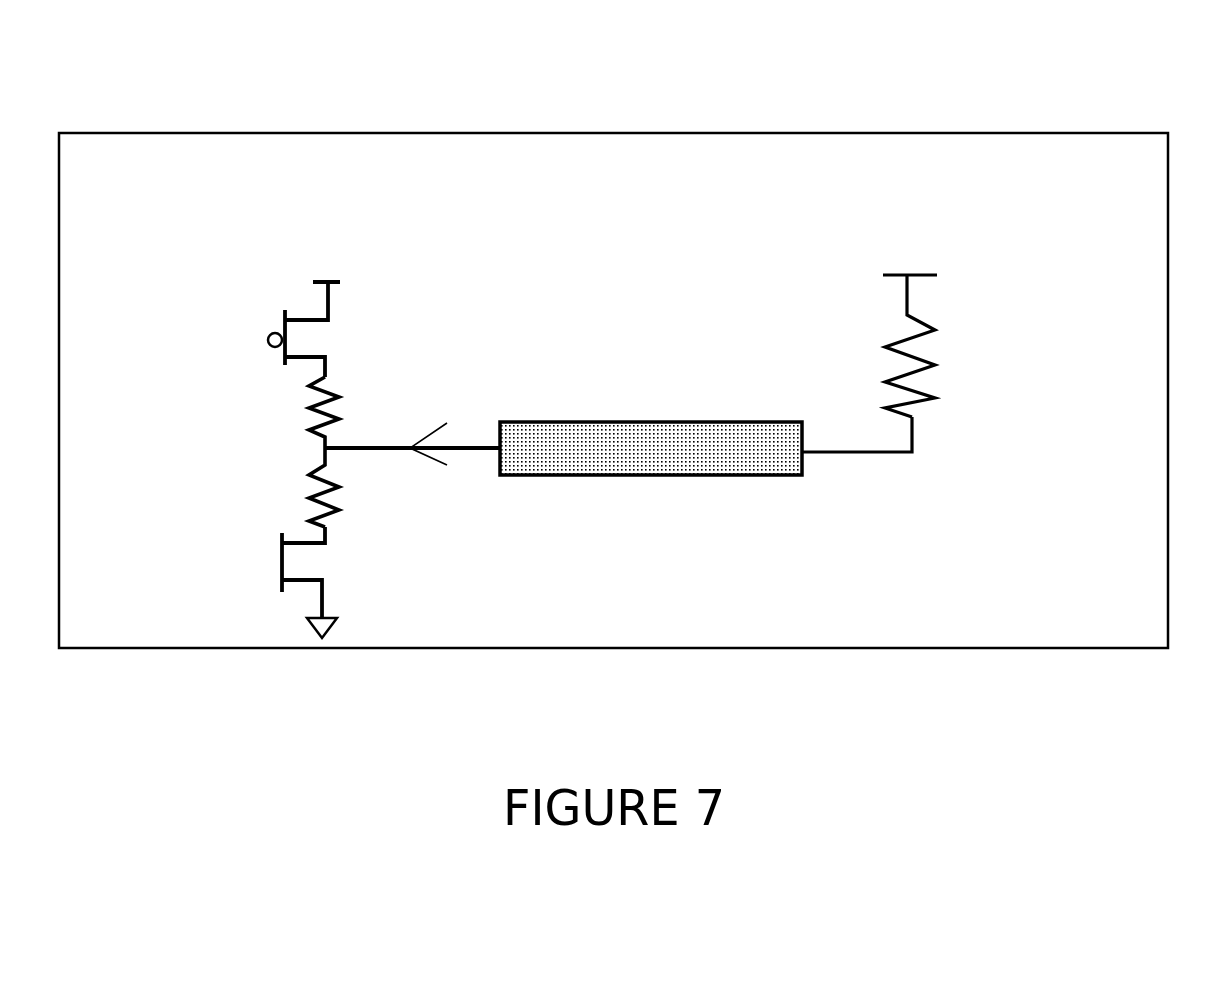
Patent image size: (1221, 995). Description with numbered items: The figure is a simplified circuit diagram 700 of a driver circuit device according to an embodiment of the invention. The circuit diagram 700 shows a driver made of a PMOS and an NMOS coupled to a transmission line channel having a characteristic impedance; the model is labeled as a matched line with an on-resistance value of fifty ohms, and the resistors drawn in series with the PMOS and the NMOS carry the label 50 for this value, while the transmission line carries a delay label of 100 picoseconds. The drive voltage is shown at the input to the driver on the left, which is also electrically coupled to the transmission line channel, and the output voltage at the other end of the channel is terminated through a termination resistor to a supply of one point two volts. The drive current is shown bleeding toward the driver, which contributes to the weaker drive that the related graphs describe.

The circuit diagram 700 is at (256, 56).
The 50 ohm driver resistor 50 is at (359, 460).
The transmission line with 100 ps delay 100 is at (651, 521).